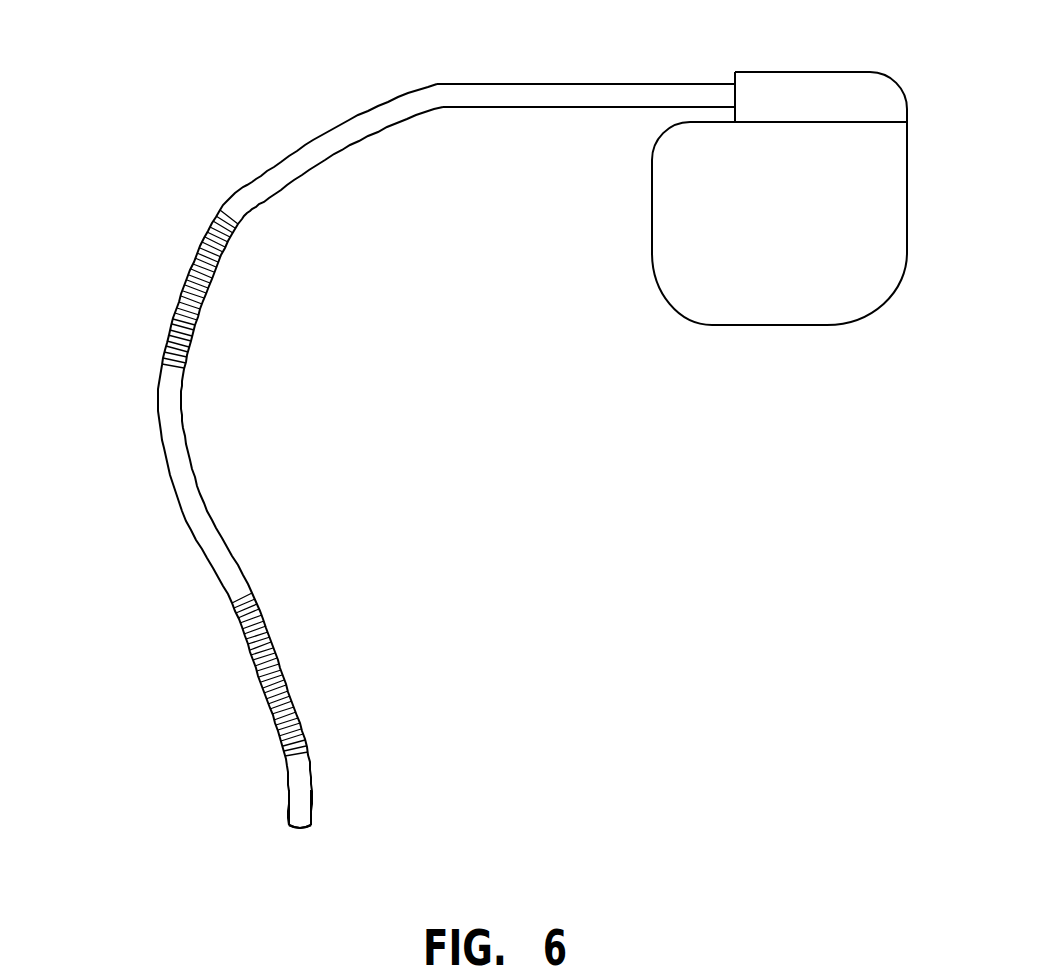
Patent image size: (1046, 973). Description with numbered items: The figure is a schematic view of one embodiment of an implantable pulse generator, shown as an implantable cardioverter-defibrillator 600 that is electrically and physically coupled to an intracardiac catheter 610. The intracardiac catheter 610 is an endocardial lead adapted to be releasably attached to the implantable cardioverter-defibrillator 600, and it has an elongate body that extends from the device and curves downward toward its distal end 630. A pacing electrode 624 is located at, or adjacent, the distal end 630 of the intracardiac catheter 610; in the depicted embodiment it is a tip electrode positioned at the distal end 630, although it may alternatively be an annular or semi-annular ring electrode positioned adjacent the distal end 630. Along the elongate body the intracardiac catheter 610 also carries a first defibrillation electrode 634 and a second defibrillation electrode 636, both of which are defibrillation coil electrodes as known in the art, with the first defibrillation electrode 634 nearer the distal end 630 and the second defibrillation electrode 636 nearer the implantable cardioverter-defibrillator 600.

The implantable cardioverter-defibrillator 600 is at (800, 72).
The intracardiac catheter 610 is at (589, 83).
The second defibrillation electrode 636 is at (146, 252).
The first defibrillation electrode 634 is at (222, 698).
The distal end 630 is at (288, 817).
The pacing electrode 624 is at (297, 828).